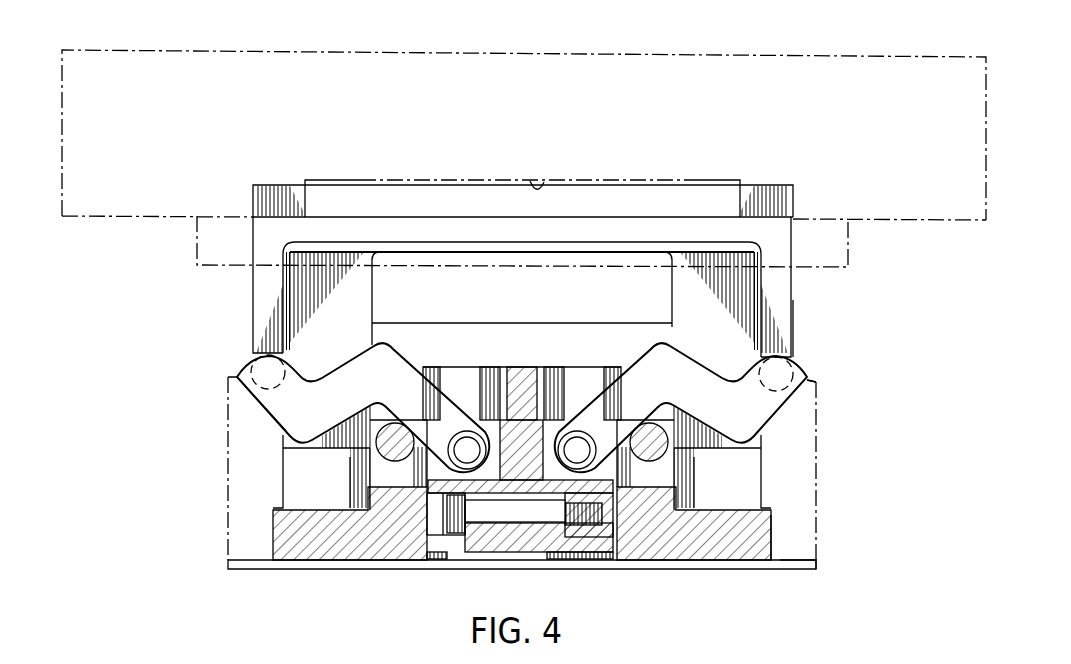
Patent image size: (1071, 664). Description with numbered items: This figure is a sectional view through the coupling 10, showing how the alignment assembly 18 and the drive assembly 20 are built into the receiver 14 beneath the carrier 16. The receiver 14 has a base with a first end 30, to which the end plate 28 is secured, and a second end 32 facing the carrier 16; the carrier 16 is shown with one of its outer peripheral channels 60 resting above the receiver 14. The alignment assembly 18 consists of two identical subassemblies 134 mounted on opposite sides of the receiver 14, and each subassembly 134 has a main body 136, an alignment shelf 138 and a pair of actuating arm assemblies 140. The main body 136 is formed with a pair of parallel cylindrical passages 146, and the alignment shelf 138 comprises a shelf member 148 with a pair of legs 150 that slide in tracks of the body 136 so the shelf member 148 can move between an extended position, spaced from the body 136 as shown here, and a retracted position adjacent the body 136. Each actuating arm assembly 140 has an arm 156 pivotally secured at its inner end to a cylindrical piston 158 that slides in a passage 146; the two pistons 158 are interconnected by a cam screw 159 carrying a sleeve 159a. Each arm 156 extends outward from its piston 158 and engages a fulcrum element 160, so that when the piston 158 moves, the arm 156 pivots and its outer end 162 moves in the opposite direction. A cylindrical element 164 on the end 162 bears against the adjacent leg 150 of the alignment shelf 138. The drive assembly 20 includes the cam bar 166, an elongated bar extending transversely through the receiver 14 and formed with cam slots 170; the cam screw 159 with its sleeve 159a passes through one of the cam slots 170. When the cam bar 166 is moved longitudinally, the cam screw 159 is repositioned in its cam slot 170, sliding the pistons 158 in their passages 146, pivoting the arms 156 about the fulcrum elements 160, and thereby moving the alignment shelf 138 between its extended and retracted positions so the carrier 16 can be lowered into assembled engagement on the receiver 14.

The coupling 10 is at (864, 349).
The receiver 14 is at (229, 532).
The carrier 16 is at (654, 92).
The alignment assembly 18 is at (358, 538).
The drive assembly 20 is at (487, 513).
The end plate 28 is at (775, 565).
The first end 30 is at (818, 553).
The second end 32 is at (810, 378).
The outer peripheral channels 60 is at (537, 182).
The subassemblies 134 is at (773, 540).
The main body 136 is at (680, 543).
The alignment shelf 138 is at (407, 208).
The actuating arm assemblies 140 is at (737, 422).
The cylindrical passages 146 is at (478, 378).
The shelf member 148 is at (352, 205).
The legs 150 is at (262, 311).
The arm 156 is at (295, 402).
The cylindrical piston 158 is at (445, 552).
The cam screw 159 is at (480, 517).
The sleeve 159a is at (510, 495).
The fulcrum element 160 is at (378, 443).
The end 162 is at (256, 371).
The cylindrical element 164 is at (239, 394).
The cam bar 166 is at (528, 552).
The cam slots 170 is at (565, 552).